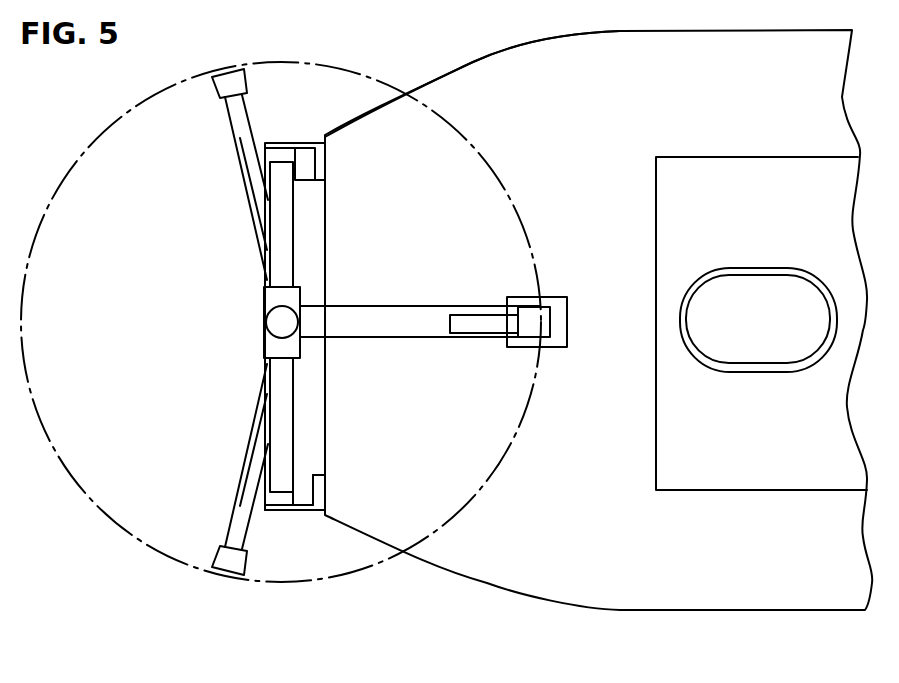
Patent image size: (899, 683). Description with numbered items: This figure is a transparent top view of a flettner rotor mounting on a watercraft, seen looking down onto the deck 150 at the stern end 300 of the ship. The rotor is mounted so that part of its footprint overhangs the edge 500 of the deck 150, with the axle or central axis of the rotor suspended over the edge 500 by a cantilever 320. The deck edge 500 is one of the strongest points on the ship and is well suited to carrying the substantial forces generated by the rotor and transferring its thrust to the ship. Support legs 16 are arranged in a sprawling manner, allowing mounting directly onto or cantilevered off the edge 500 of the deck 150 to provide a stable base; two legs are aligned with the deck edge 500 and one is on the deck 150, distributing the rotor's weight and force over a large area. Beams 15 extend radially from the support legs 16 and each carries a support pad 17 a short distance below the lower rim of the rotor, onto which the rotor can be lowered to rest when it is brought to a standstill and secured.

The beam 15 is at (233, 157).
The support leg 16 is at (267, 260).
The support pad 17 is at (242, 82).
The deck 150 is at (497, 82).
The stern end 300 is at (325, 420).
The cantilever 320 is at (297, 507).
The edge 500 is at (783, 610).